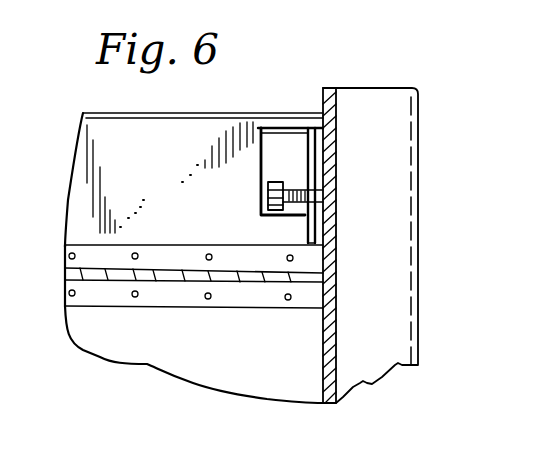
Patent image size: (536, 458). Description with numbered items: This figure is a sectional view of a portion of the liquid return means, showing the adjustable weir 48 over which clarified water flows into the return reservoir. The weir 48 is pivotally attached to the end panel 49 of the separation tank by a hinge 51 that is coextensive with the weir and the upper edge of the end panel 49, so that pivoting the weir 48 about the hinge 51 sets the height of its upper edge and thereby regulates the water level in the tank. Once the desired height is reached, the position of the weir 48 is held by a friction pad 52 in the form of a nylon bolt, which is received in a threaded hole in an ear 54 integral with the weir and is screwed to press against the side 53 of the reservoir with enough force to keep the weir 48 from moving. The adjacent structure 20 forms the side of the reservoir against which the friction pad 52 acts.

The side panel / frame member 20 is at (423, 109).
The weir 48 is at (176, 177).
The end panel 49 is at (90, 323).
The hinge 51 is at (64, 268).
The friction pad 52 is at (262, 197).
The side of the return reservoir 53 is at (320, 355).
The ear 54 is at (307, 150).